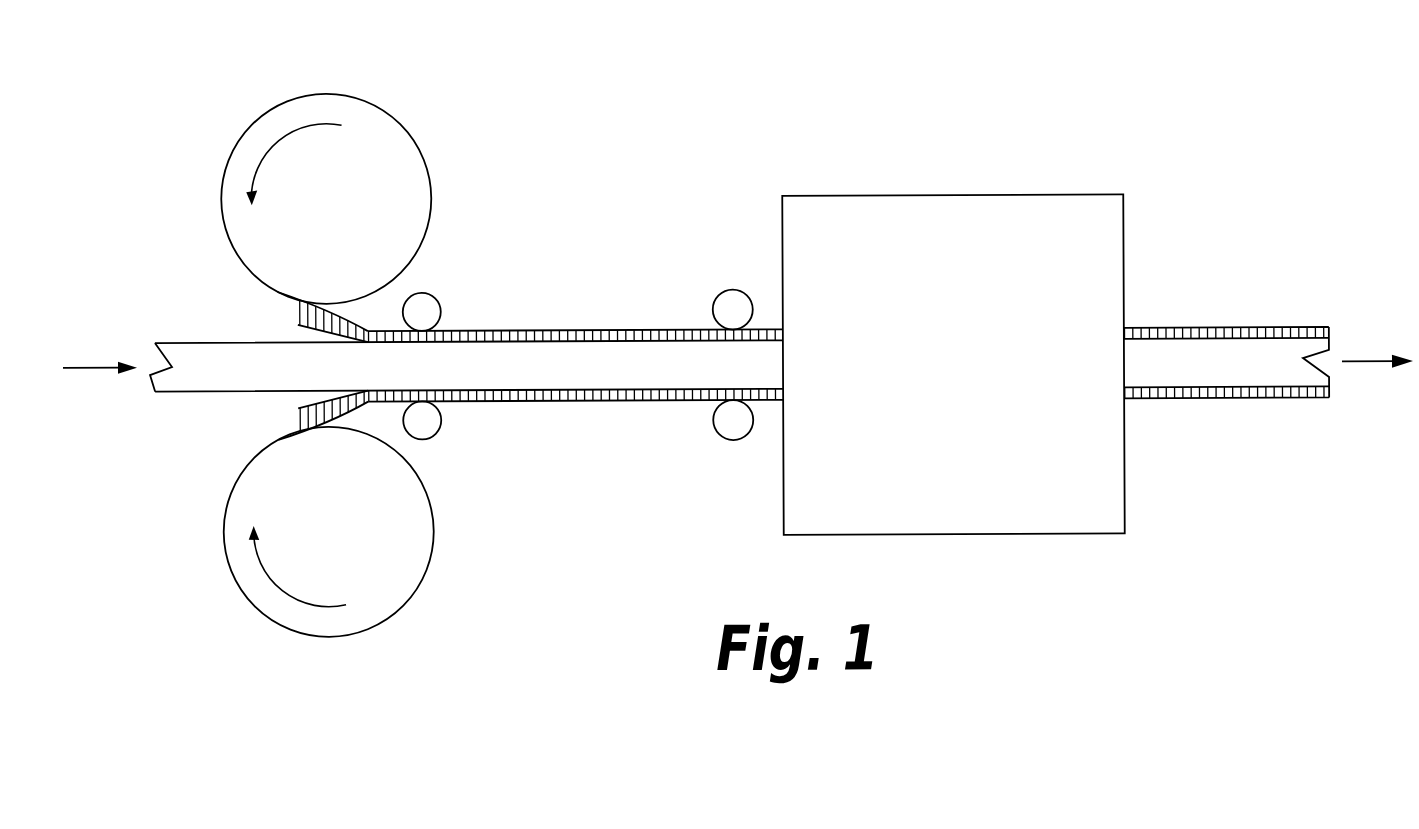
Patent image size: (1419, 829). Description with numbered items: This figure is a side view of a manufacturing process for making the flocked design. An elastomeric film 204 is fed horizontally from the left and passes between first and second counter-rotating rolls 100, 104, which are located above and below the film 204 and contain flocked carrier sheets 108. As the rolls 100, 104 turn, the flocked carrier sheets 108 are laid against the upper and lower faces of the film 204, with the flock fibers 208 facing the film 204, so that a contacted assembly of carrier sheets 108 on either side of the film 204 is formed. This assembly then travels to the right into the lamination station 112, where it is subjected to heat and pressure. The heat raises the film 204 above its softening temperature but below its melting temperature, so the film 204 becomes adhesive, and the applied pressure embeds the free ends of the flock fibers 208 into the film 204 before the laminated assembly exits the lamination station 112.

The first counter-rotating roll 100 is at (370, 209).
The second counter-rotating roll 104 is at (375, 546).
The flocked carrier sheets 108 is at (463, 328).
The lamination station 112 is at (962, 196).
The elastomeric film 204 is at (168, 390).
The flock fibers 208 is at (316, 325).